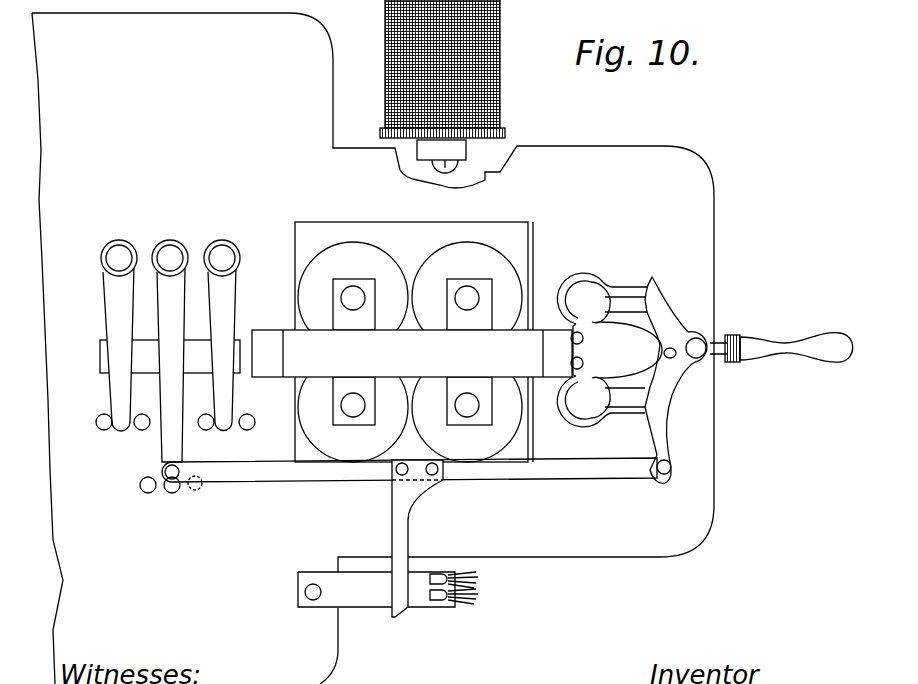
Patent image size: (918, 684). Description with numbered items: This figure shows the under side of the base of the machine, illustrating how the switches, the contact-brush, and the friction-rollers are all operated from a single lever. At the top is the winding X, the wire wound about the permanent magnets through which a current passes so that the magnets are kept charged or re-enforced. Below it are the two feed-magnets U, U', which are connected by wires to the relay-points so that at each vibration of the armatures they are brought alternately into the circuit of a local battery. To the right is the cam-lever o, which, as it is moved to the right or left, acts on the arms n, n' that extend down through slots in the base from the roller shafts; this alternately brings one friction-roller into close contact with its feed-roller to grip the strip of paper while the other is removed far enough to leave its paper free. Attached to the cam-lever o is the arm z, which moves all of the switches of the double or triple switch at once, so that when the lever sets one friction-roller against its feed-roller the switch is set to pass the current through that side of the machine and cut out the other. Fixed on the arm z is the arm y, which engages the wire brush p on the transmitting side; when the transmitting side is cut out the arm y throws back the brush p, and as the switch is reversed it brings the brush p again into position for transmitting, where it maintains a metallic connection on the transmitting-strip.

The wire winding X is at (426, 86).
The feed-magnet U is at (353, 352).
The feed-magnet U' is at (467, 352).
The arm n' is at (626, 289).
The arm n is at (625, 412).
The cam-lever o is at (669, 353).
The arm z is at (405, 480).
The arm y is at (401, 538).
The wire brush p is at (388, 603).